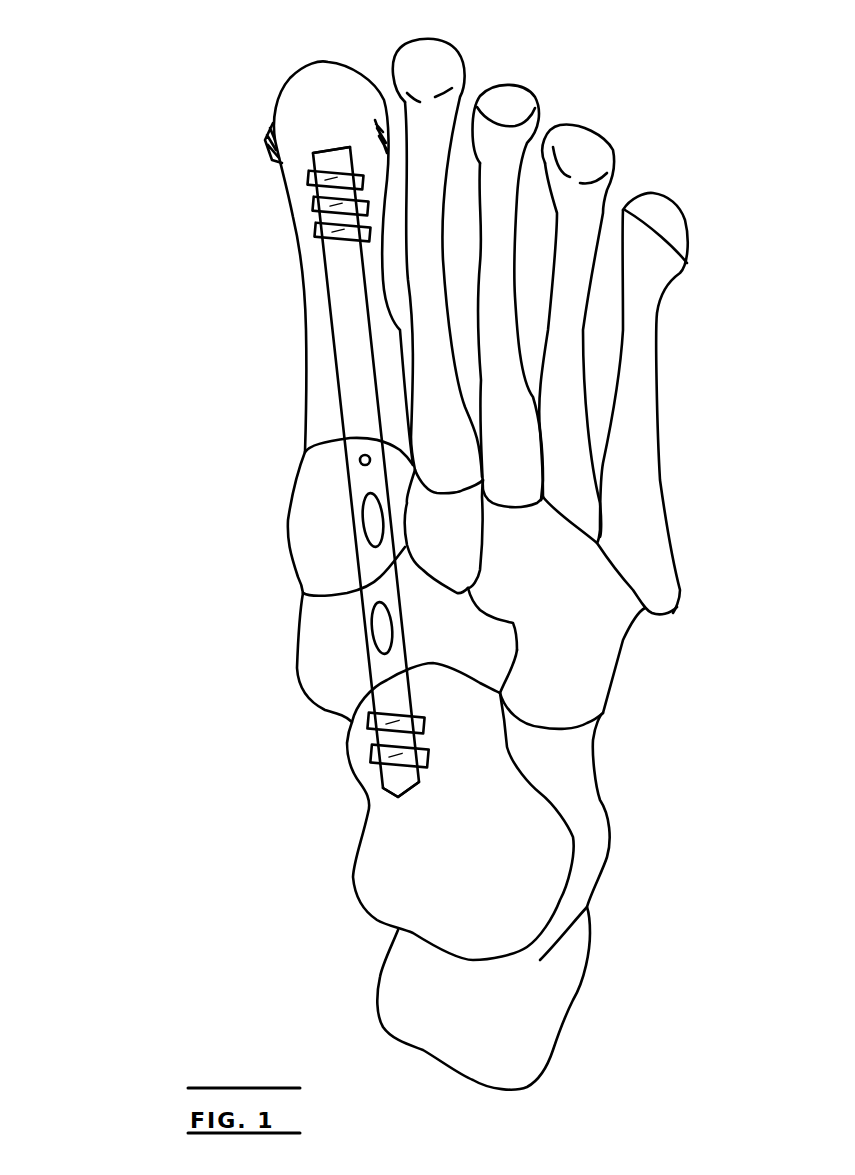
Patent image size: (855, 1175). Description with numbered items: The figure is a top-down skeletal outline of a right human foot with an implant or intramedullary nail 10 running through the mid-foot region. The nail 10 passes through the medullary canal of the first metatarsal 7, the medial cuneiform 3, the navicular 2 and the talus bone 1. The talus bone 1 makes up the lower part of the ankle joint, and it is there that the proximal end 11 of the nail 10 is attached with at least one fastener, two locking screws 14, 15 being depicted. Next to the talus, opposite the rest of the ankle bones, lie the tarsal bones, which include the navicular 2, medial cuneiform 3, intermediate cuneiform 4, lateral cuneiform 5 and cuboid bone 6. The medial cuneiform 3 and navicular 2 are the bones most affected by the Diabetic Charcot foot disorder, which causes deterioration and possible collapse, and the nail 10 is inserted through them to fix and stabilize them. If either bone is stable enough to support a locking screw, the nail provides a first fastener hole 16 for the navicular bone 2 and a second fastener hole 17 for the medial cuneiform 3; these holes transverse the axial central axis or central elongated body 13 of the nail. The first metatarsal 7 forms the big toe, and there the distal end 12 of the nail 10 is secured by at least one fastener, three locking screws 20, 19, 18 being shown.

The talus bone 1 is at (450, 832).
The navicular 2 is at (348, 623).
The medial cuneiform 3 is at (327, 470).
The intermediate cuneiform 4 is at (440, 543).
The lateral cuneiform 5 is at (520, 542).
The cuboid bone 6 is at (555, 680).
The first metatarsal 7 is at (318, 118).
The intramedullary nail 10 is at (358, 352).
The proximal end 11 is at (400, 794).
The distal end 12 is at (318, 153).
The axial central axis 13 is at (360, 463).
The locking screw 14 is at (399, 760).
The locking screw 15 is at (392, 725).
The first fastener hole 16 is at (380, 637).
The second fastener hole 17 is at (362, 537).
The locking screw 18 is at (340, 235).
The locking screw 19 is at (338, 208).
The locking screw 20 is at (327, 182).